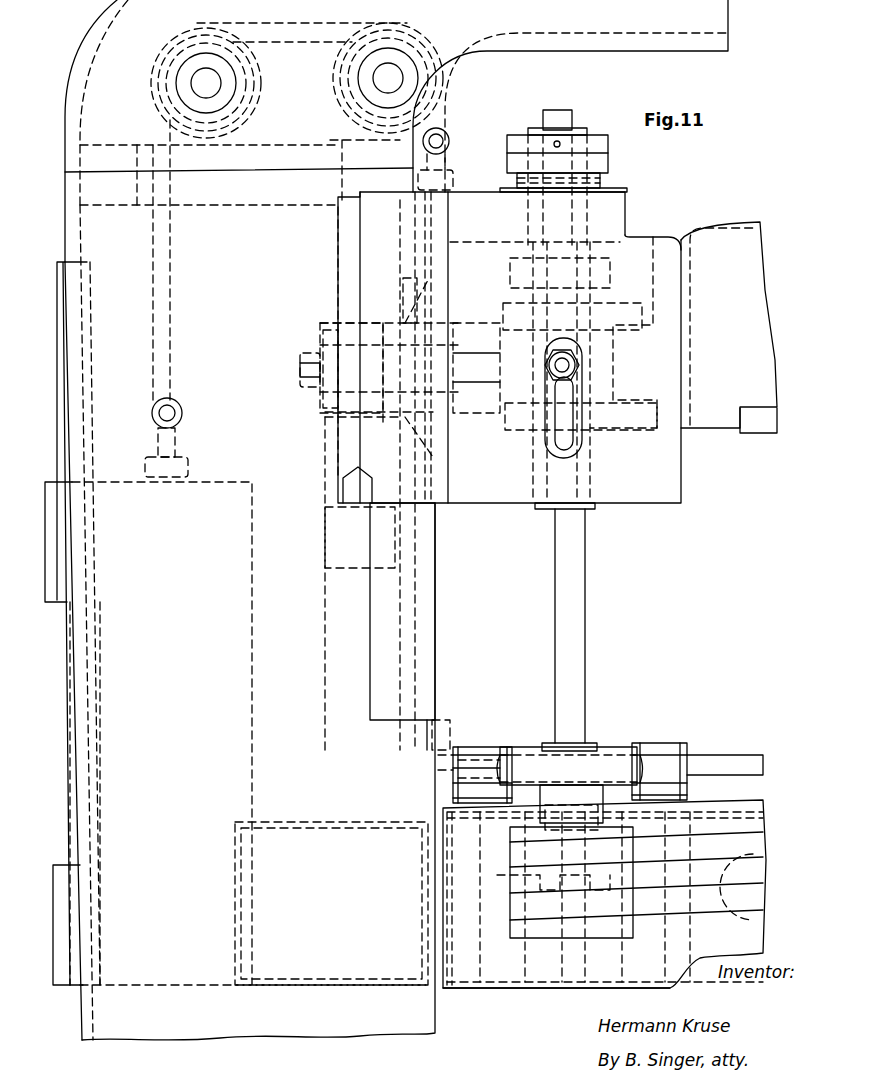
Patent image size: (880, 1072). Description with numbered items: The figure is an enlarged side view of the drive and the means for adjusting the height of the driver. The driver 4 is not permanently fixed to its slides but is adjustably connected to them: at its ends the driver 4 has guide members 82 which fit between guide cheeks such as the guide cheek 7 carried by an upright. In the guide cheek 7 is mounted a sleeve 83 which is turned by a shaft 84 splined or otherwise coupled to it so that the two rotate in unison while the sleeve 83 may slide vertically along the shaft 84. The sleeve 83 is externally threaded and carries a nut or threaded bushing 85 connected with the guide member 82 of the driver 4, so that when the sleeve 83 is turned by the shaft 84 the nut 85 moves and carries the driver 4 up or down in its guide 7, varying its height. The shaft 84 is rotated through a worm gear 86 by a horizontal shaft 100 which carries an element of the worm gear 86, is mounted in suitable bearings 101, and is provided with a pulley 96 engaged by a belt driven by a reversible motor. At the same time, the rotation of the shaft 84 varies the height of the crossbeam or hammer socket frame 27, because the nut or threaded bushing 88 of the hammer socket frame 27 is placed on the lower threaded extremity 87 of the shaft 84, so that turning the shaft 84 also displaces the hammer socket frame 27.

The driver 4 is at (731, 230).
The guide cheek 7 is at (672, 490).
The hammer socket frame 27 is at (700, 845).
The guide member 82 is at (676, 233).
The sleeve 83 is at (592, 504).
The shaft 84 is at (573, 540).
The nut or threaded bushing 85 is at (628, 304).
The worm gear 86 is at (610, 762).
The lower threaded extremity 87 is at (575, 973).
The nut or threaded bushing 88 is at (573, 853).
The pulley 96 is at (438, 745).
The shaft 100 is at (467, 760).
The bearings 101 is at (505, 750).